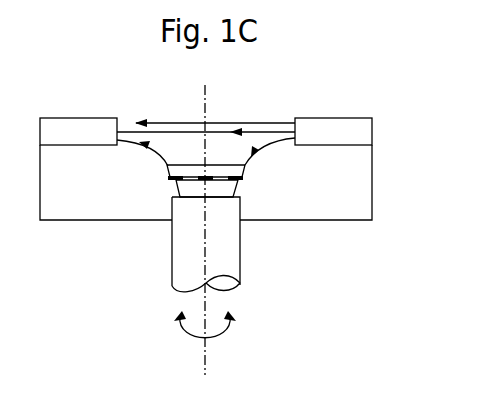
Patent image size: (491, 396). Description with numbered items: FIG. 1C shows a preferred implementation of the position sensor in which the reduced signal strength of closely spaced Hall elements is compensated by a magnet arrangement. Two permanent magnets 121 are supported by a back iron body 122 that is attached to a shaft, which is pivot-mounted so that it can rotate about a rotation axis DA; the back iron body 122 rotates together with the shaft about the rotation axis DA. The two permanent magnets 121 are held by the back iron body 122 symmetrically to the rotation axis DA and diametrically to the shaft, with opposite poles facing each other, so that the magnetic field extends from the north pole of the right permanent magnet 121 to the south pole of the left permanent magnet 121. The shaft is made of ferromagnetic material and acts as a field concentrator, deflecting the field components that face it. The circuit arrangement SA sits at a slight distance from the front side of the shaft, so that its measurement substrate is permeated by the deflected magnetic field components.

The permanent magnet 121 is at (70, 118).
The back iron body 122 is at (372, 163).
The circuit arrangement SA is at (258, 167).
The rotation axis DA is at (206, 362).